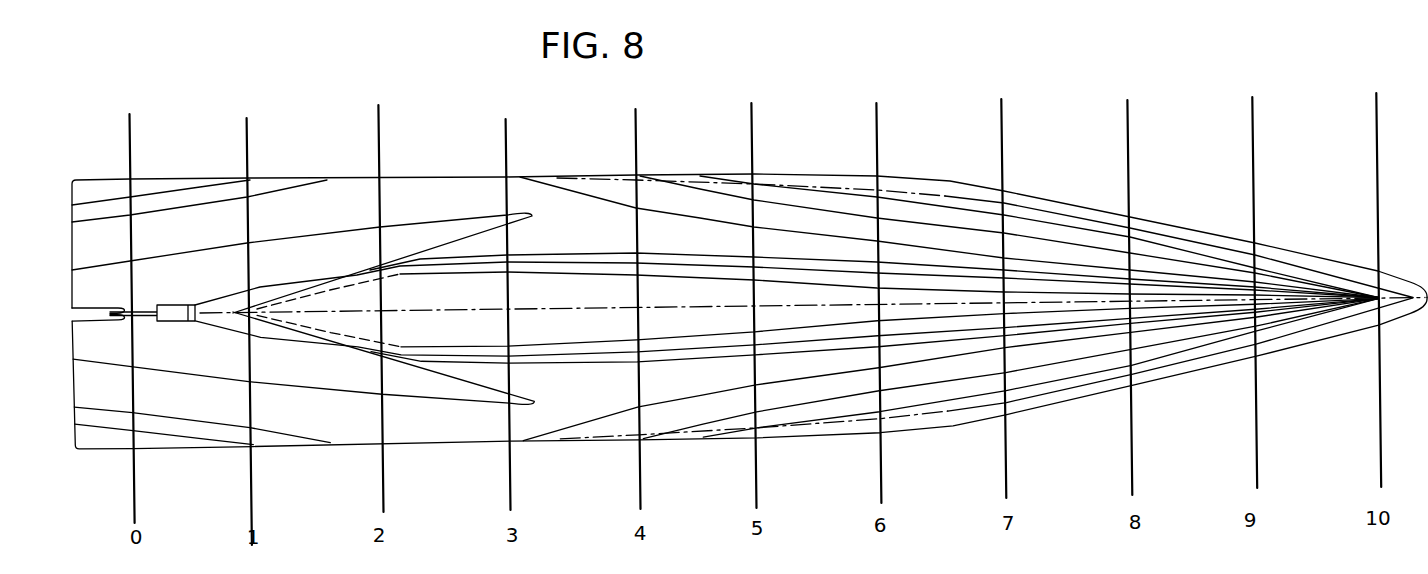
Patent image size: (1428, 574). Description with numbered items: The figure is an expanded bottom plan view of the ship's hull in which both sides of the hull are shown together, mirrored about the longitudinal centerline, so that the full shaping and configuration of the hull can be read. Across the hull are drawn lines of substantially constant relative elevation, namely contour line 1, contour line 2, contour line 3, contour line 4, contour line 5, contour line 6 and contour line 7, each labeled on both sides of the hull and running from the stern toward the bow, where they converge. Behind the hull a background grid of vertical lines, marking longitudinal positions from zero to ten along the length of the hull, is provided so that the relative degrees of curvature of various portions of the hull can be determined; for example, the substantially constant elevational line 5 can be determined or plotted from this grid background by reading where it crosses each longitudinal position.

The contour line 1 is at (815, 284).
The contour line 2 is at (285, 290).
The contour line 3 is at (675, 251).
The contour line 4 is at (228, 243).
The contour line 5 is at (203, 205).
The contour line 6 is at (100, 179).
The contour line 7 is at (165, 193).